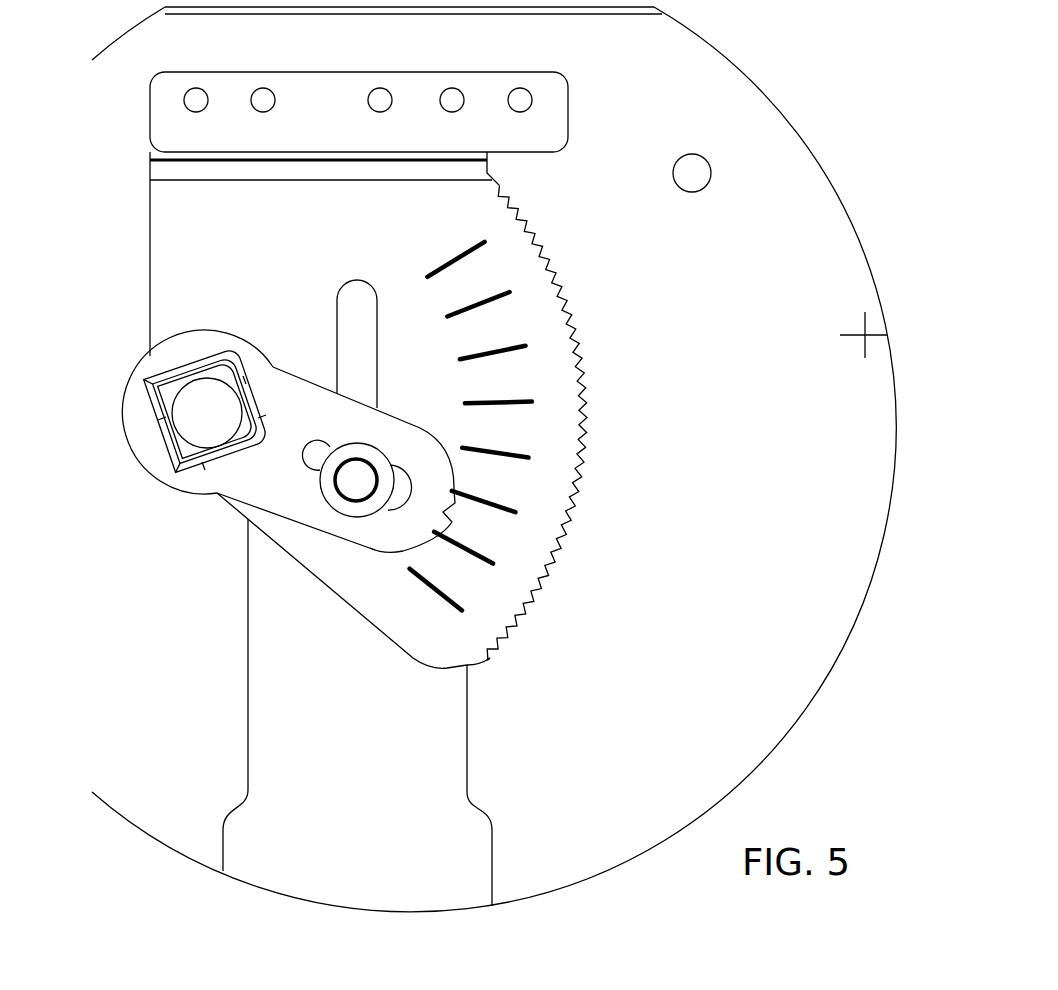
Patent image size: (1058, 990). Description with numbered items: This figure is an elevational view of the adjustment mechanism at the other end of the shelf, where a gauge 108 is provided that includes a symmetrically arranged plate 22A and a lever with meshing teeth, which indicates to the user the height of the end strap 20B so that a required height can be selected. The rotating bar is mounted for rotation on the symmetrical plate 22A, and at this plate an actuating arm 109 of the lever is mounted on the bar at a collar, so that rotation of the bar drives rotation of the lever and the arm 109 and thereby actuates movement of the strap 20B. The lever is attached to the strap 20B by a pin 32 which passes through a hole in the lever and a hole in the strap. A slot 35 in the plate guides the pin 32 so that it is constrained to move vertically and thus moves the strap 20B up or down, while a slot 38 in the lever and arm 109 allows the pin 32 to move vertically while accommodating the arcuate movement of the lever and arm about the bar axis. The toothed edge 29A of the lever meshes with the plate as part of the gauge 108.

The end strap 20B is at (445, 773).
The actuating arm 109 is at (313, 517).
The slot 35 is at (90, 258).
The slot 38 is at (393, 510).
The pin 32 is at (350, 485).
The symmetrical plate 22A is at (540, 363).
The toothed sector gear 29A is at (540, 428).
The gauge 108 is at (603, 310).